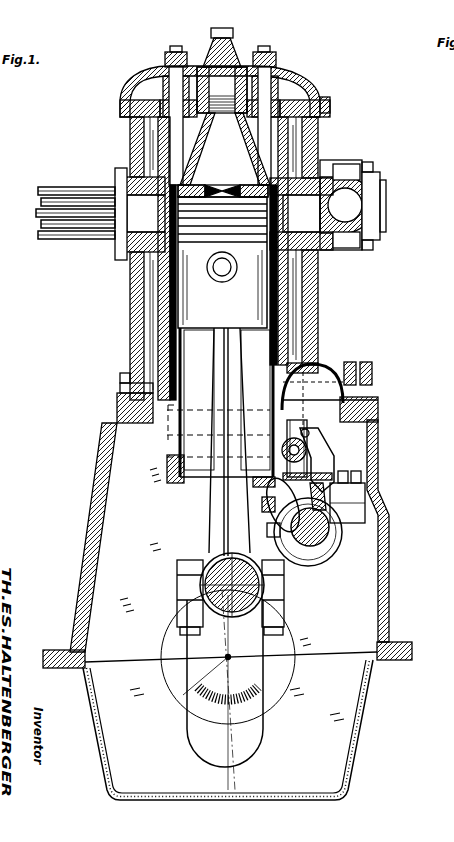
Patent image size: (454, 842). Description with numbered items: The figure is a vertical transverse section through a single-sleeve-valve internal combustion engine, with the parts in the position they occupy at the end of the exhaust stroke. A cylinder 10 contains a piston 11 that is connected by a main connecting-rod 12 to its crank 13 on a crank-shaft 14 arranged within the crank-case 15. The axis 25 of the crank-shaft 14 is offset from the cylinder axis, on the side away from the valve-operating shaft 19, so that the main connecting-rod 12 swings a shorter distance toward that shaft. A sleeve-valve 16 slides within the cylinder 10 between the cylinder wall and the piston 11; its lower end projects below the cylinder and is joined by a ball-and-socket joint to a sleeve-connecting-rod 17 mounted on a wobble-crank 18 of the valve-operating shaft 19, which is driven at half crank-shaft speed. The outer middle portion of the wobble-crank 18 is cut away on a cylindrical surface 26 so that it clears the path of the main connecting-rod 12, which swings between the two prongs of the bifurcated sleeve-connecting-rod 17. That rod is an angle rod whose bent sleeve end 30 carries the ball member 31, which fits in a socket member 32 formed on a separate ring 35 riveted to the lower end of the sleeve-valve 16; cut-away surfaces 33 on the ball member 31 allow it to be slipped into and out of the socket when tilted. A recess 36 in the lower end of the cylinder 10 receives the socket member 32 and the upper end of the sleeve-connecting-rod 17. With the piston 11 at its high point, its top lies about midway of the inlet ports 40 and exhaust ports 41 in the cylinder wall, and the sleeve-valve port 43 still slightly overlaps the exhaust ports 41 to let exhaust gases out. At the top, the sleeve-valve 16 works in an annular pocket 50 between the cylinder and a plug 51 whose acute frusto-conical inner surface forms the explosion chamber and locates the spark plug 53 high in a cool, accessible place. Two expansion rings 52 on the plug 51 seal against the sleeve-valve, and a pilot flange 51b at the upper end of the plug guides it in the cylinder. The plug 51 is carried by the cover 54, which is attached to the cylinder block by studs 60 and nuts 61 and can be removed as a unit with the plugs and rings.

The cylinder 10 is at (165, 297).
The piston 11 is at (222, 262).
The main connecting-rod 12 is at (212, 517).
The crank 13 is at (183, 640).
The crank-shaft 14 is at (258, 657).
The crank-case 15 is at (103, 500).
The sleeve-valve 16 is at (180, 447).
The sleeve-connecting-rod 17 is at (328, 462).
The wobble-crank 18 is at (312, 568).
The valve-operating shaft 19 is at (380, 523).
The axis of the crank-shaft 25 is at (197, 683).
The cylindrical surface 26 is at (324, 550).
The sleeve end 30 is at (313, 450).
The ball member 31 is at (307, 430).
The socket member 32 is at (296, 437).
The cut-away surfaces 33 is at (285, 452).
The ring 35 is at (170, 483).
The recess 36 is at (290, 384).
The inlet ports 40 is at (283, 214).
The exhaust ports 41 is at (236, 178).
The sleeve-valve port 43 is at (226, 190).
The annular pocket 50 is at (317, 135).
The plug 51 is at (314, 91).
The pilot flange 51b is at (123, 119).
The expansion rings 52 is at (130, 174).
The spark plug 53 is at (233, 46).
The cover 54 is at (288, 68).
The studs 60 is at (176, 54).
The nuts 61 is at (165, 61).